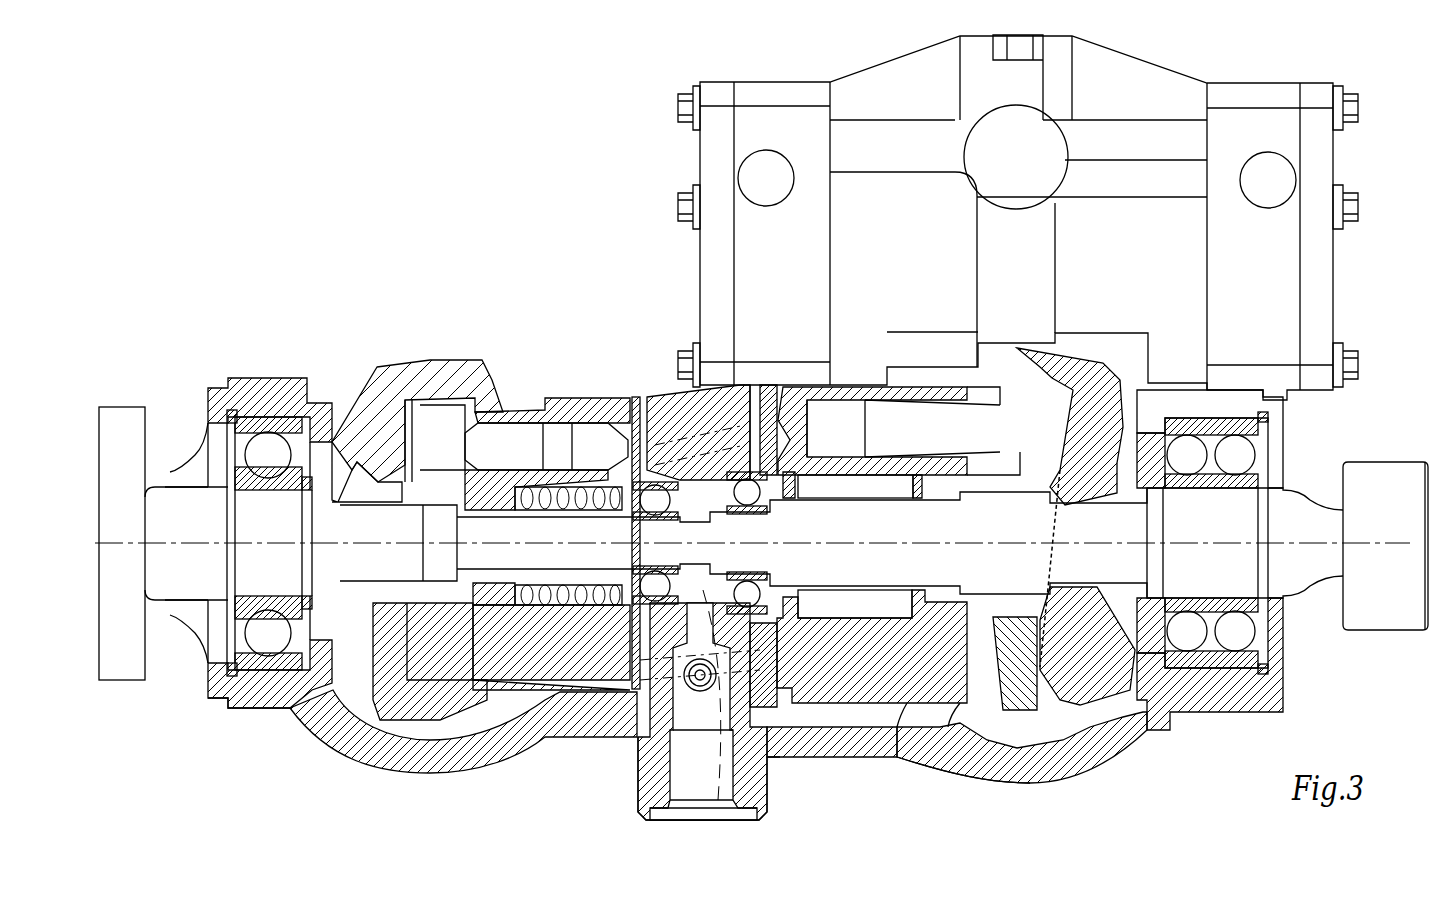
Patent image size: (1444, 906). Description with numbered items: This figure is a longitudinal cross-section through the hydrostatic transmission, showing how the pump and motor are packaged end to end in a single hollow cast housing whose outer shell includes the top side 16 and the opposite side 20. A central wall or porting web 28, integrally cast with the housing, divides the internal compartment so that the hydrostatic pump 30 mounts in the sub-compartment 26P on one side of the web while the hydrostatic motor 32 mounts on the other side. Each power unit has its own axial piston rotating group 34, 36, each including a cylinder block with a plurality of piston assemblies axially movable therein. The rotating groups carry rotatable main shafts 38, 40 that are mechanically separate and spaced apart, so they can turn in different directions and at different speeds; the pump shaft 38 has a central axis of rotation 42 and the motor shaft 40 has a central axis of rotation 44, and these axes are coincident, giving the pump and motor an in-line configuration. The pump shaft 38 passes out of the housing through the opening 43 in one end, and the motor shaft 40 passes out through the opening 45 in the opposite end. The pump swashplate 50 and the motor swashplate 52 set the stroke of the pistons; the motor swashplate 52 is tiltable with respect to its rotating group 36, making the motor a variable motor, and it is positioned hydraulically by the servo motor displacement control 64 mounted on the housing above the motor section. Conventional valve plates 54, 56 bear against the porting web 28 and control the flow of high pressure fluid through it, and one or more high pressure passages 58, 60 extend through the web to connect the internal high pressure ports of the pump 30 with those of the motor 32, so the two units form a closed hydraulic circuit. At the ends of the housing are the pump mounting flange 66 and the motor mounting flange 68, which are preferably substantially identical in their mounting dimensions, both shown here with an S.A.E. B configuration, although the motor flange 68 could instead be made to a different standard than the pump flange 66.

The top side 16 is at (275, 378).
The side 20 is at (488, 770).
The sub-compartment 26P is at (640, 725).
The porting web 28 is at (728, 385).
The hydrostatic pump 30 is at (510, 716).
The hydrostatic motor 32 is at (963, 755).
The rotating group 34 is at (570, 682).
The rotating group 36 is at (858, 690).
The pump shaft 38 is at (188, 602).
The motor shaft 40 is at (1313, 600).
The axis of rotation 42 is at (203, 550).
The opening 43 is at (222, 432).
The axis of rotation 44 is at (1400, 548).
The opening 45 is at (1280, 425).
The pump swashplate 50 is at (418, 362).
The motor swashplate 52 is at (1030, 742).
The valve plate 54 is at (640, 395).
The valve plate 56 is at (770, 722).
The high pressure passage 58 is at (692, 384).
The high pressure passage 60 is at (768, 803).
The servo motor displacement control 64 is at (1322, 78).
The pump mounting flange 66 is at (210, 712).
The motor mounting flange 68 is at (1285, 682).